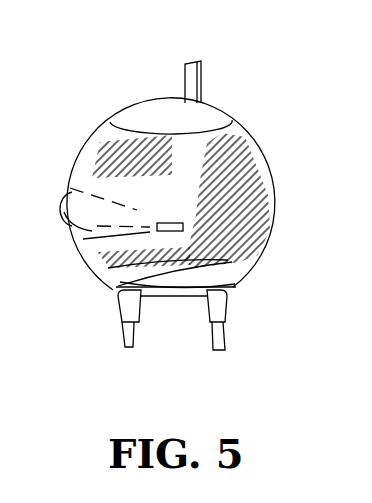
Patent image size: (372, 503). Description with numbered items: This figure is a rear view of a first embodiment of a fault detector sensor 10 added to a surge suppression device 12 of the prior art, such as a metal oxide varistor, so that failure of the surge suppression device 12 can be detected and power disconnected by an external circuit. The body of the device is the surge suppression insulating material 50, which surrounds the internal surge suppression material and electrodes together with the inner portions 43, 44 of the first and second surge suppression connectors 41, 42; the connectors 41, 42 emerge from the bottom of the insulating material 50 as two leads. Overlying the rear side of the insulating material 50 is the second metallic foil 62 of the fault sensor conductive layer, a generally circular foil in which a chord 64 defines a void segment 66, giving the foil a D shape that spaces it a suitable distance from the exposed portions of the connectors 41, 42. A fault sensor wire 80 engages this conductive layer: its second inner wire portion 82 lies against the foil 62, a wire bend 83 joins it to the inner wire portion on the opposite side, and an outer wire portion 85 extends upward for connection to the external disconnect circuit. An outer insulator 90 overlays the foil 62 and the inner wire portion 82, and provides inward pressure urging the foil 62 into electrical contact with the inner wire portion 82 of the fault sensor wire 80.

The fault detector sensor 10 is at (88, 93).
The surge suppression device 12 is at (163, 100).
The fault sensor wire 80 is at (185, 68).
The outer wire portion 85 is at (200, 67).
The second metallic foil 62 is at (58, 182).
The wire bend 83 is at (65, 217).
The second inner wire portion 82 is at (80, 238).
The chord 64 is at (108, 267).
The void segment 66 is at (223, 260).
The outer insulator 90 is at (263, 197).
The surge suppression insulating material 50 is at (170, 292).
The inner portion of second surge suppression connector 44 is at (108, 297).
The second surge suppression connector 42 is at (122, 342).
The inner portion of first surge suppression connector 43 is at (242, 297).
The first surge suppression connector 41 is at (227, 345).